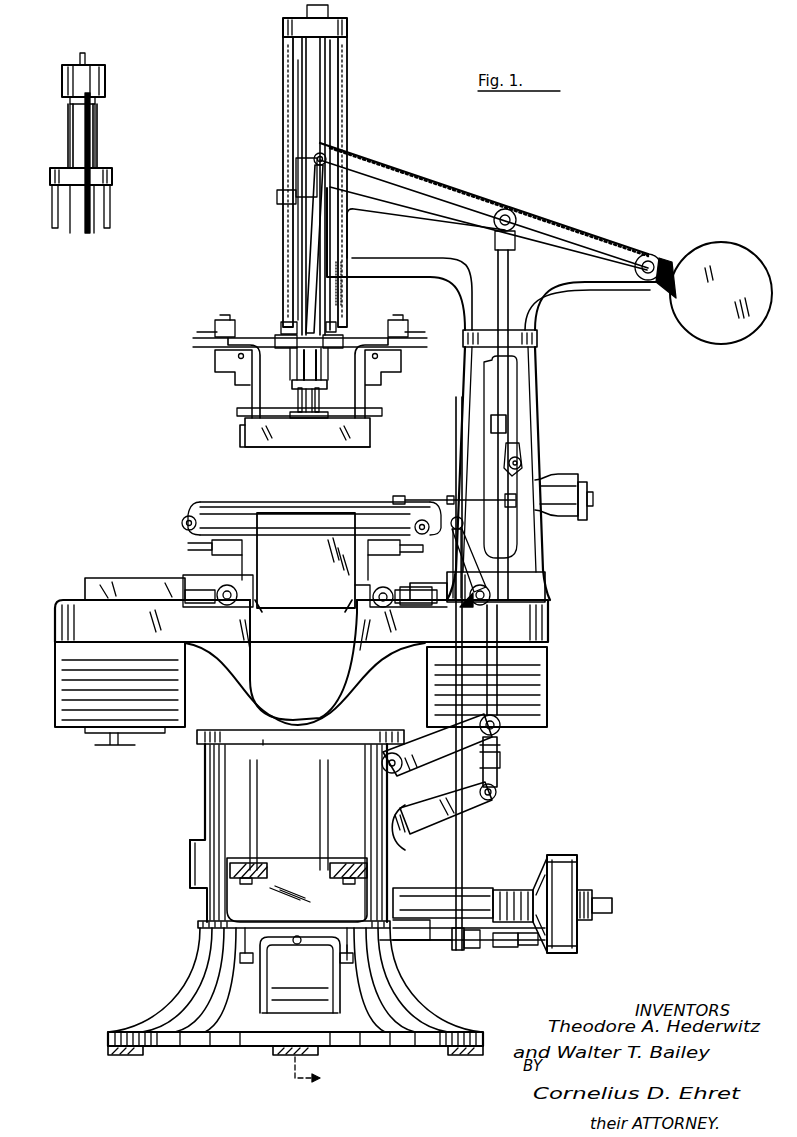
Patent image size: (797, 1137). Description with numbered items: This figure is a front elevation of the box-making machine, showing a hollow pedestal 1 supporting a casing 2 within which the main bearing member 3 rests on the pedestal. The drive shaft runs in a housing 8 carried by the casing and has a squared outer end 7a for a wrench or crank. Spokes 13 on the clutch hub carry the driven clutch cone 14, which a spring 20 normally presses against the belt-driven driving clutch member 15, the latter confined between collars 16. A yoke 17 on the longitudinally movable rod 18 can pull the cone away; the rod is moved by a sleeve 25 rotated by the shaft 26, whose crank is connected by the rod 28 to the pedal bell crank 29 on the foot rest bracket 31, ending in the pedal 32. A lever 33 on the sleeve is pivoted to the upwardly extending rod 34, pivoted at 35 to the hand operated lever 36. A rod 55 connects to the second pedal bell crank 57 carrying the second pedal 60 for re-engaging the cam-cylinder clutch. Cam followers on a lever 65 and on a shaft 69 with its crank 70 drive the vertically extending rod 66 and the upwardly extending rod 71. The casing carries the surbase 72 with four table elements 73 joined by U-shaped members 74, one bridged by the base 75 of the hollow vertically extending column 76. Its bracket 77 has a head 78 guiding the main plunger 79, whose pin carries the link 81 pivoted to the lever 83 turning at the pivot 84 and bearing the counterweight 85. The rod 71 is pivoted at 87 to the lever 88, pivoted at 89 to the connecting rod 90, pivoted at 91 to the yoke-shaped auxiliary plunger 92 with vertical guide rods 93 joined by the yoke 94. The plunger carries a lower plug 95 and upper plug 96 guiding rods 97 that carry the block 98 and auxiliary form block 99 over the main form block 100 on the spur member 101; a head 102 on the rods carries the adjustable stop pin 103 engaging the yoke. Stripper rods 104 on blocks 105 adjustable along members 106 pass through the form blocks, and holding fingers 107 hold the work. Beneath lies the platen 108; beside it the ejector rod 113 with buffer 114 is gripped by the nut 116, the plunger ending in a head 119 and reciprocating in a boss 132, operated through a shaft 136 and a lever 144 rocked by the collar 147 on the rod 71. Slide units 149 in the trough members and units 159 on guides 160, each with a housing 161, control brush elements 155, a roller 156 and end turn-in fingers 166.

The pedestal 1 is at (172, 1008).
The casing 2 is at (205, 808).
The main bearing member 3 is at (316, 1076).
The squared outer end 7a is at (605, 898).
The housing 8 is at (440, 888).
The spokes 13 is at (540, 888).
The driven clutch cone 14 is at (550, 865).
The driving clutch member 15 is at (577, 862).
The collars 16 is at (588, 890).
The yoke 17 is at (528, 945).
The longitudinally movable rod 18 is at (503, 947).
The spring 20 is at (512, 890).
The sleeve 25 is at (476, 948).
The shaft 26 is at (440, 940).
The rod 28 is at (352, 950).
The pedal bell crank 29 is at (400, 940).
The foot rest bracket 31 is at (245, 900).
The pedal 32 is at (367, 868).
The lever 33 is at (458, 950).
The upwardly extending rod 34 is at (460, 663).
The pivot 35 is at (466, 620).
The hand operated lever 36 is at (451, 530).
The rod 55 is at (240, 958).
The second pedal bell crank 57 is at (245, 937).
The second pedal 60 is at (228, 855).
The lever 65 is at (446, 830).
The vertically extending rod 66 is at (500, 757).
The shaft 69 is at (402, 762).
The crank 70 is at (438, 782).
The upwardly extending rod 71 is at (512, 258).
The surbase 72 is at (205, 712).
The table elements 73 is at (55, 616).
The U-shaped members 74 is at (75, 643).
The base 75 is at (510, 595).
The hollow vertically extending column 76 is at (540, 372).
The bracket 77 is at (425, 281).
The head 78 is at (299, 244).
The main plunger 79 is at (87, 130).
The link 81 is at (326, 152).
The lever 83 is at (440, 180).
The pivot 84 is at (648, 254).
The counterweight 85 is at (716, 242).
The pivot 87 is at (506, 209).
The lever 88 is at (393, 180).
The pivot 89 is at (296, 182).
The connecting rod 90 is at (306, 221).
The pivot 91 is at (283, 322).
The auxiliary plunger 92 is at (336, 330).
The vertical guide rods 93 is at (283, 64).
The yoke 94 is at (112, 178).
The plug 95 is at (292, 387).
The plug 96 is at (95, 100).
The rods 97 is at (68, 150).
The block 98 is at (306, 418).
The auxiliary form block 99 is at (243, 432).
The main form block 100 is at (262, 442).
The spur member 101 is at (327, 389).
The head 102 is at (105, 84).
The adjustable stop pin 103 is at (97, 117).
The stripper rods 104 is at (252, 388).
The blocks 105 is at (225, 350).
The members 106 is at (213, 332).
The holding fingers 107 is at (237, 412).
The platen 108 is at (330, 503).
The ejector rod 113 is at (432, 496).
The buffer 114 is at (397, 495).
The nut 116 is at (448, 497).
The head 119 is at (588, 498).
The boss 132 is at (558, 482).
The shaft 136 is at (521, 460).
The lever 144 is at (512, 447).
The collar 147 is at (506, 423).
The slide units 149 is at (138, 590).
The brush elements 155 is at (350, 584).
The roller 156 is at (193, 540).
The units 159 is at (282, 532).
The guides 160 is at (240, 622).
The housing 161 is at (225, 577).
The end turn-in fingers 166 is at (240, 556).